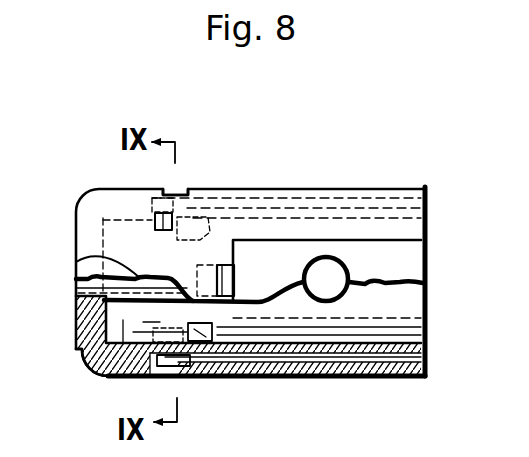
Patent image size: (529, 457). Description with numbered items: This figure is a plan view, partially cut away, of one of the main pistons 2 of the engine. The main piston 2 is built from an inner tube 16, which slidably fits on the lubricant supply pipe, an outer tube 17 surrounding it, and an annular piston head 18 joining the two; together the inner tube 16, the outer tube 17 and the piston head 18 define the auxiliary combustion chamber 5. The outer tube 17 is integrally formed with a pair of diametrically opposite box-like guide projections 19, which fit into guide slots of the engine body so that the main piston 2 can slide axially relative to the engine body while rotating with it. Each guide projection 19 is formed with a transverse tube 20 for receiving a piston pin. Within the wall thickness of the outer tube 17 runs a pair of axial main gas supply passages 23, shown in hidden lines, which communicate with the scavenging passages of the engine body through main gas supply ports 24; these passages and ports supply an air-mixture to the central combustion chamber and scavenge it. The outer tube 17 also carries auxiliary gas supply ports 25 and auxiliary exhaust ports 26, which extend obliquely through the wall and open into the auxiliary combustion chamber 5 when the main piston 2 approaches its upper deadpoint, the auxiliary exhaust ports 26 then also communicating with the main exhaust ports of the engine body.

The main piston 2 is at (407, 179).
The auxiliary combustion chamber 5 is at (112, 380).
The inner tube 16 is at (76, 262).
The outer tube 17 is at (377, 376).
The piston head 18 is at (89, 320).
The guide projection 19 is at (377, 254).
The transverse tube 20 is at (323, 273).
The main gas supply passage 23 is at (402, 195).
The main gas supply port 24 is at (175, 191).
The auxiliary gas supply port 25 is at (222, 264).
The auxiliary exhaust port 26 is at (151, 221).